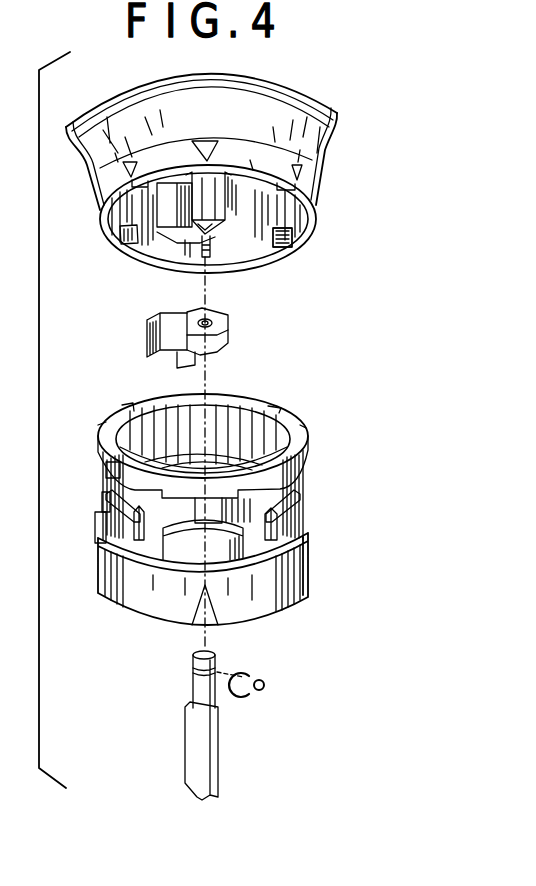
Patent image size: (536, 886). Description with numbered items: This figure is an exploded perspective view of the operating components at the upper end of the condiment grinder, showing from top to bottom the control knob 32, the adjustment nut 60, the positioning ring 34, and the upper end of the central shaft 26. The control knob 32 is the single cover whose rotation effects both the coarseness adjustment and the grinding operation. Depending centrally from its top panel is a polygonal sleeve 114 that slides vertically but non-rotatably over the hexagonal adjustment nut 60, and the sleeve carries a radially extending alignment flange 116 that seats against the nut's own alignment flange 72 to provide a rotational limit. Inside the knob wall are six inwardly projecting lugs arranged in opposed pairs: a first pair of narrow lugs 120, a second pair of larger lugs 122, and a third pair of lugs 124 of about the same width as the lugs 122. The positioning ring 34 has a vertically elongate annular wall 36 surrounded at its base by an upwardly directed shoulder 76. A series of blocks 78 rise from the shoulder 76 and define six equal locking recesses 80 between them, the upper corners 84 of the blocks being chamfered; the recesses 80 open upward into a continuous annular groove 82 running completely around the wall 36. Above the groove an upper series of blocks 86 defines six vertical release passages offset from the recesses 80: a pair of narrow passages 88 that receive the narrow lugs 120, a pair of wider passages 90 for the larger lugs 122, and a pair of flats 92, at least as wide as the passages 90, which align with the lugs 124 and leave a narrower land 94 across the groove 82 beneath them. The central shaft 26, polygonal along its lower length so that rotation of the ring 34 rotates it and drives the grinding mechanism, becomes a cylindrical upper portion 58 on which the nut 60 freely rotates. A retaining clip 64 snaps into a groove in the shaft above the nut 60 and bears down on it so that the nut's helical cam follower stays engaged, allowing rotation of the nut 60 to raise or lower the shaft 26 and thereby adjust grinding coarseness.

The control knob 32 is at (223, 166).
The third pair of lugs 124 is at (226, 147).
The second pair of larger lugs 122 is at (294, 193).
The sleeve 114 is at (252, 211).
The alignment flange 116 is at (167, 242).
The first pair of narrow lugs 120 is at (284, 252).
The adjustment nut 60 is at (188, 338).
The alignment flange 72 is at (147, 333).
The positioning ring 34 is at (214, 514).
The annular wall 36 is at (274, 405).
The wider release passages 90 is at (117, 410).
The flats 92 is at (213, 492).
The upper blocks 86 is at (117, 472).
The narrow passages 88 is at (128, 486).
The annular groove 82 is at (280, 500).
The upper corners 84 is at (113, 540).
The shoulder 76 is at (101, 548).
The blocks 78 is at (258, 544).
The locking recesses 80 is at (150, 540).
The land 94 is at (212, 540).
The cylindrical upper portion 58 is at (226, 695).
The retaining clip 64 is at (273, 686).
The central shaft 26 is at (215, 766).